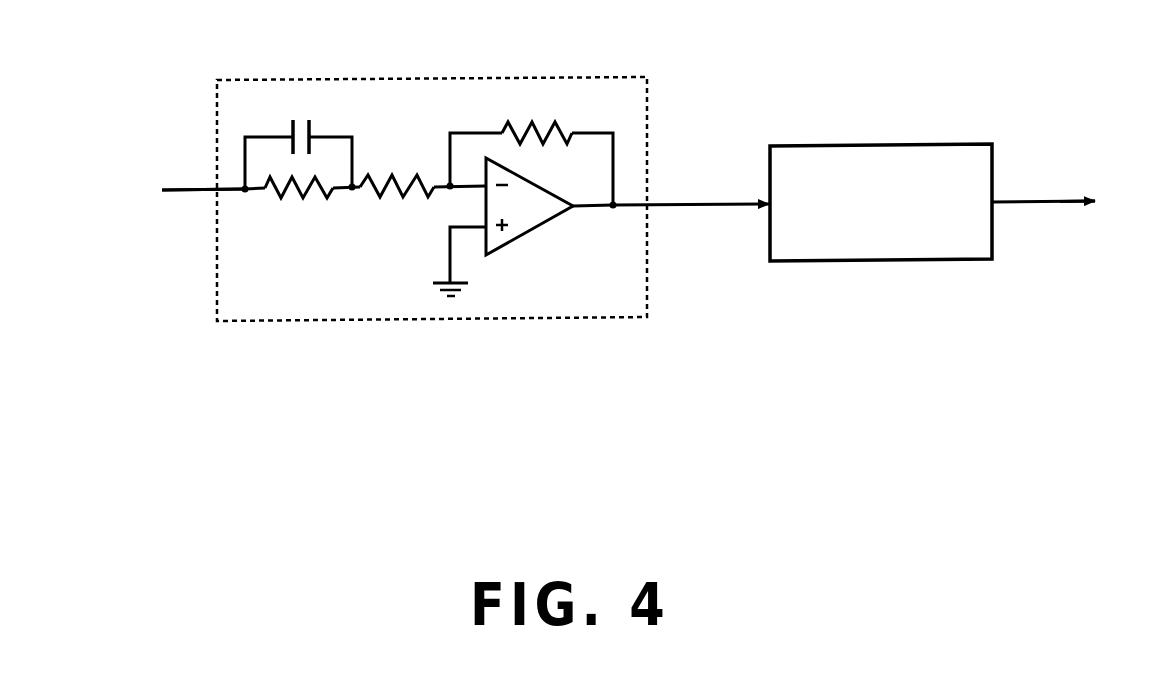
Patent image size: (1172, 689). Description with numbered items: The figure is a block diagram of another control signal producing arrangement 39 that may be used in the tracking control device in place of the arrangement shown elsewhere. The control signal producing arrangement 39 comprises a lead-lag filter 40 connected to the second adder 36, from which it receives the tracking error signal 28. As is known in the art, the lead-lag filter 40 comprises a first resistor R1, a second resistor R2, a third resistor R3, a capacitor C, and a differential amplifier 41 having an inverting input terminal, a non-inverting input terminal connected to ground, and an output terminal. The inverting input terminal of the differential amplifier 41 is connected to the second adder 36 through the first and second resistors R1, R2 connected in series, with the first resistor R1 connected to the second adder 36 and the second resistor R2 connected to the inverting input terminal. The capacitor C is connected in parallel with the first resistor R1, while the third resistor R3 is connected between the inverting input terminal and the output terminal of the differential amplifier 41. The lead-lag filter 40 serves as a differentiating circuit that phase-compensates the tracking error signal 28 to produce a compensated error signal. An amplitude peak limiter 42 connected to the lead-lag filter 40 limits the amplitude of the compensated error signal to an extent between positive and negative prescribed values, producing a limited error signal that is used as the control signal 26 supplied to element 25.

The control signal producing arrangement 39 is at (417, 402).
The lead-lag filter 40 is at (423, 78).
The differential amplifier 41 is at (520, 235).
The amplitude peak limiter 42 is at (872, 145).
The tracking error signal 28 is at (181, 191).
The control signal 26 is at (1017, 203).
The second adder 36 is at (135, 189).
The destination block 25 is at (1115, 200).
The first resistor R1 is at (296, 200).
The second resistor R2 is at (392, 200).
The third resistor R3 is at (531, 121).
The capacitor C is at (300, 121).